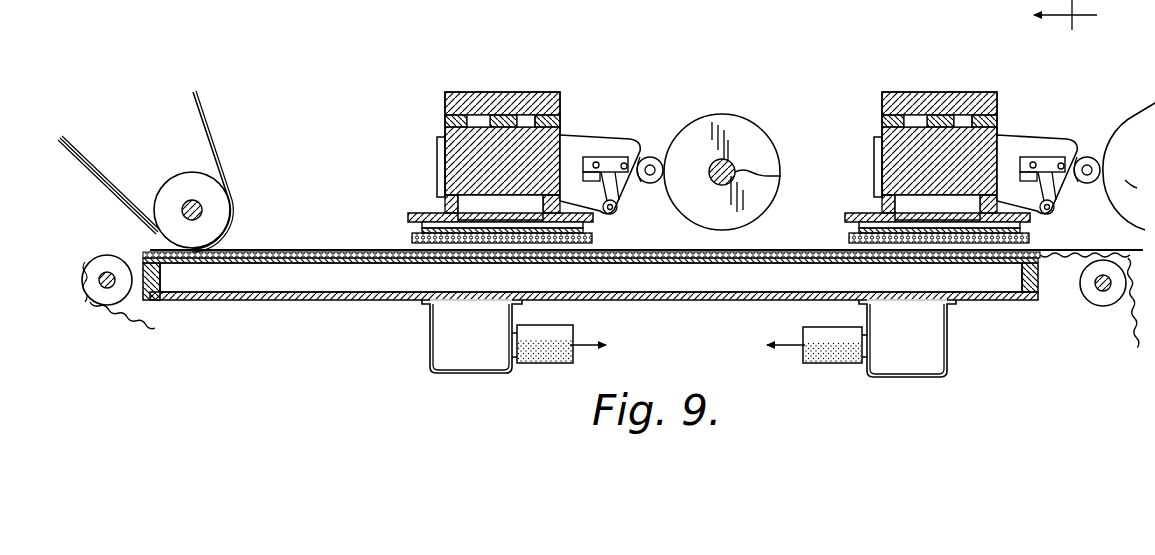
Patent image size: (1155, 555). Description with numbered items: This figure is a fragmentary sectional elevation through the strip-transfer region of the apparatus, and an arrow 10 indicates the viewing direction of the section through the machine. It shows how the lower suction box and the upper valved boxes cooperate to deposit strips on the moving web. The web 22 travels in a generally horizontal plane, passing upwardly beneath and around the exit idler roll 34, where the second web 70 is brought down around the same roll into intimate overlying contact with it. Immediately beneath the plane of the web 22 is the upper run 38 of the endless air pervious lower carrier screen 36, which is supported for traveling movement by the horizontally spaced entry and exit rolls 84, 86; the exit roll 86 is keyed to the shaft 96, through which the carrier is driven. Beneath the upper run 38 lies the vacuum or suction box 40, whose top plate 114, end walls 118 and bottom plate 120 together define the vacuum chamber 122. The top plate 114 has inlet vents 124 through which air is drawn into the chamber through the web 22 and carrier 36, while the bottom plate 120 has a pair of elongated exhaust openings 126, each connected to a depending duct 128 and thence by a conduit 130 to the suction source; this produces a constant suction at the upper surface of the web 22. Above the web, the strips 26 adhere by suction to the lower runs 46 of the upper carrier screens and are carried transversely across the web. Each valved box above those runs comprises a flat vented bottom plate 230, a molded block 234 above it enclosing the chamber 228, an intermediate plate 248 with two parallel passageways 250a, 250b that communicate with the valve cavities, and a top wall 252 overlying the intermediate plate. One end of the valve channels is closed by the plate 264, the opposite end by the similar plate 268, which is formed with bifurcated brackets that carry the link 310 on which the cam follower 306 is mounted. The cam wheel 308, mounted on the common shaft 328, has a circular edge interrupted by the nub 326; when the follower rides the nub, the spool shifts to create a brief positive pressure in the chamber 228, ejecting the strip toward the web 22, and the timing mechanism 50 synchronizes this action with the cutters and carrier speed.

The apparatus 10 is at (1066, 24).
The web 22 is at (272, 252).
The strips 26 is at (594, 243).
The roll 34 is at (180, 176).
The lower carrier screen 36 is at (1132, 347).
The upper run 38 is at (787, 238).
The suction box 40 is at (315, 305).
The lower runs 46 is at (410, 238).
The timing mechanism 50 is at (740, 86).
The web 70 is at (200, 98).
The entry roll 84 is at (1094, 300).
The exit roll 86 is at (105, 262).
The shaft 96 is at (104, 290).
The top plate 114 is at (710, 265).
The end walls 118 is at (160, 280).
The bottom plate 120 is at (663, 301).
The vacuum chamber 122 is at (597, 283).
The inlet vents 124 is at (335, 262).
The exhaust openings 126 is at (446, 300).
The duct 128 is at (430, 345).
The conduit 130 is at (555, 363).
The chamber 228 is at (490, 200).
The bottom plate 230 is at (488, 217).
The molded block 234 is at (465, 140).
The intermediate plate 248 is at (560, 124).
The passageway 250a is at (525, 115).
The passageway 250b is at (482, 115).
The top wall 252 is at (504, 115).
The plate 264 is at (437, 150).
The plate 268 is at (1036, 116).
The cam follower 306 is at (655, 184).
The cam wheel 308 is at (748, 120).
The link 310 is at (640, 140).
The nub 326 is at (670, 126).
The shaft 328 is at (781, 176).